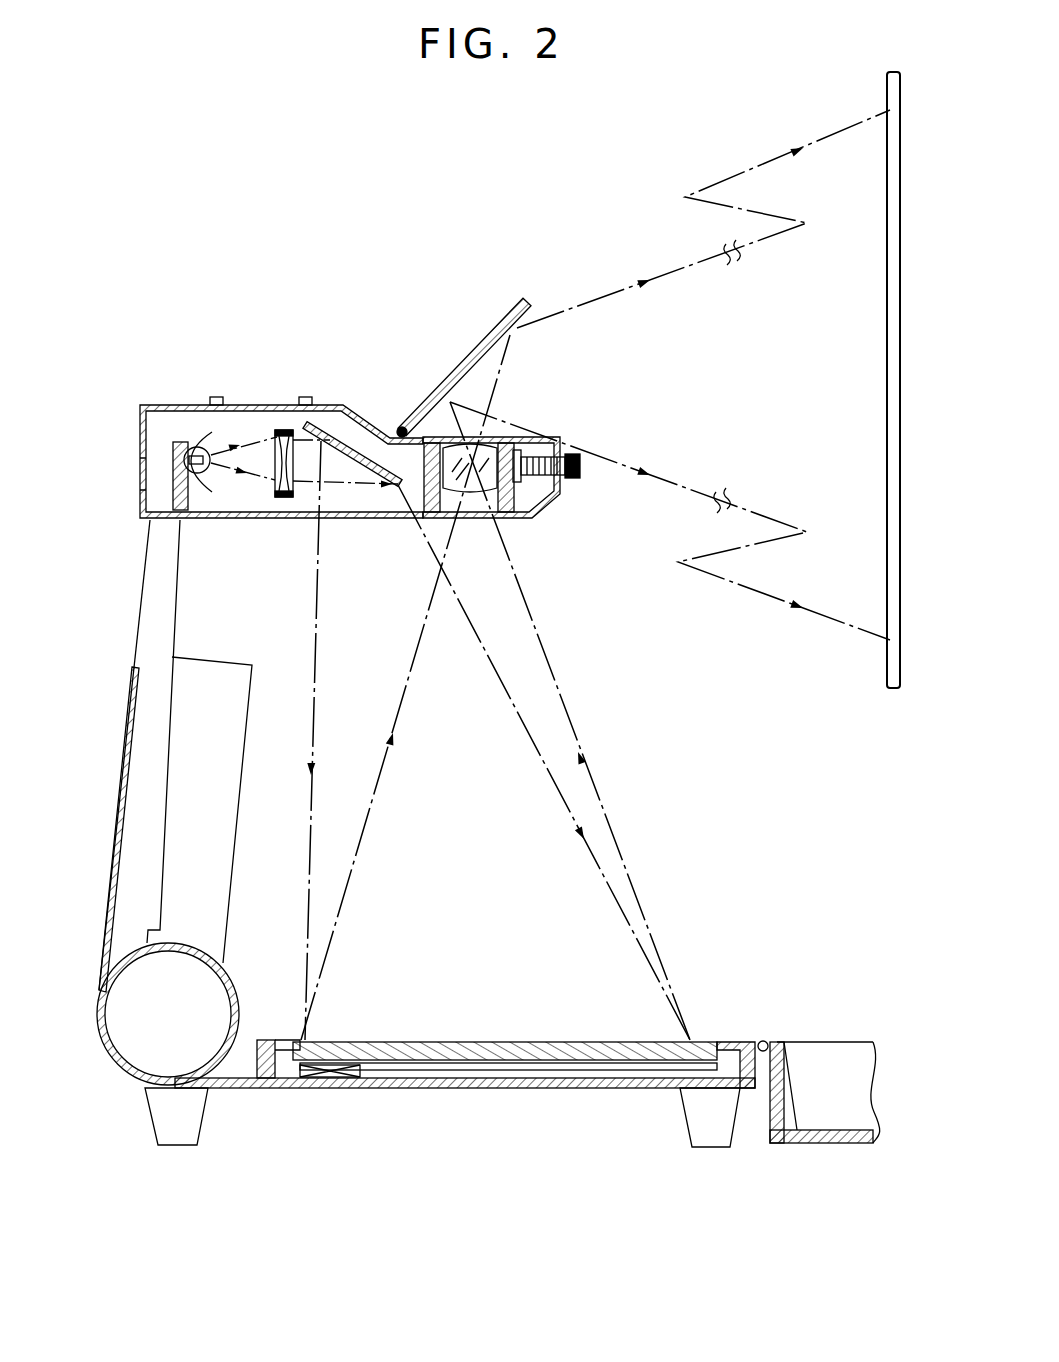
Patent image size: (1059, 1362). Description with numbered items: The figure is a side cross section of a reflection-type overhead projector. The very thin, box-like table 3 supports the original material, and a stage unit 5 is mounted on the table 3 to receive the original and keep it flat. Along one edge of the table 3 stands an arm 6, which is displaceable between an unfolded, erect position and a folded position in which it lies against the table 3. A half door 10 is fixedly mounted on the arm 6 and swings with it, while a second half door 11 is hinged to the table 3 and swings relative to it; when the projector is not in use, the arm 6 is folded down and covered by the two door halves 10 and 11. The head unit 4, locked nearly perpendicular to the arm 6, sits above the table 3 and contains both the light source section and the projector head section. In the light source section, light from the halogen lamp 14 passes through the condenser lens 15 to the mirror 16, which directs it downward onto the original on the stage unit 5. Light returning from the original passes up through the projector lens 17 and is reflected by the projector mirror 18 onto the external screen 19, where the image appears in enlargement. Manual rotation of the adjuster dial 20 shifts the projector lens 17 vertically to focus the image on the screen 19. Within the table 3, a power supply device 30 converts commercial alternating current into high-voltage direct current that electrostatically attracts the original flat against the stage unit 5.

The table 3 is at (476, 1103).
The head unit 4 is at (173, 393).
The stage unit 5 is at (526, 1028).
The arm 6 is at (158, 573).
The half door 10 is at (120, 793).
The half door 11 is at (832, 1143).
The halogen lamp 14 is at (205, 472).
The condenser lens 15 is at (281, 428).
The mirror 16 is at (344, 441).
The projector lens 17 is at (486, 508).
The projector mirror 18 is at (528, 318).
The screen 19 is at (887, 382).
The adjuster dial 20 is at (582, 468).
The power supply device 30 is at (327, 1088).